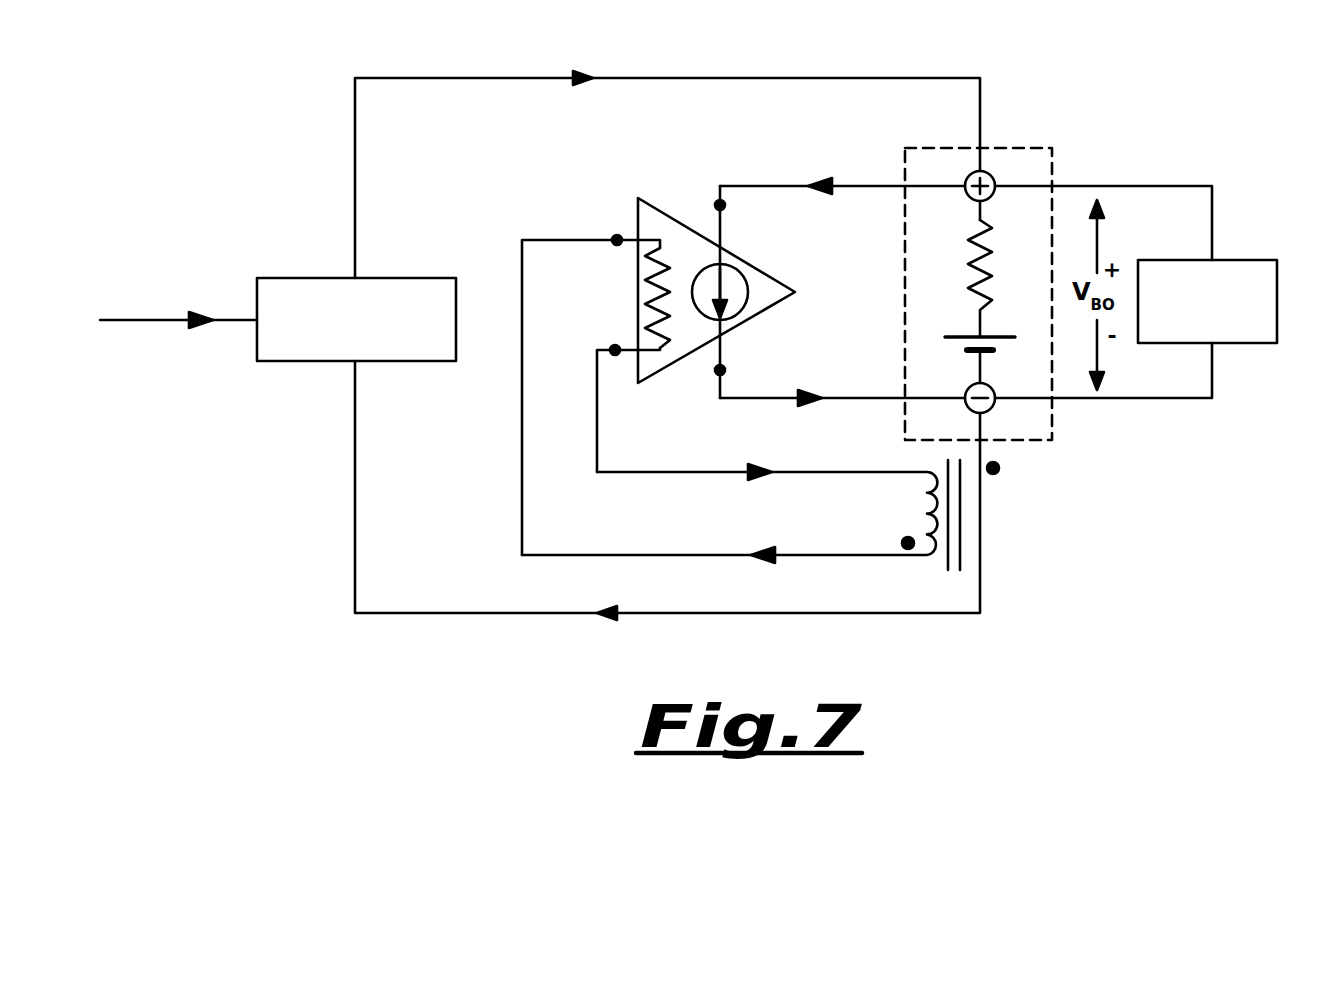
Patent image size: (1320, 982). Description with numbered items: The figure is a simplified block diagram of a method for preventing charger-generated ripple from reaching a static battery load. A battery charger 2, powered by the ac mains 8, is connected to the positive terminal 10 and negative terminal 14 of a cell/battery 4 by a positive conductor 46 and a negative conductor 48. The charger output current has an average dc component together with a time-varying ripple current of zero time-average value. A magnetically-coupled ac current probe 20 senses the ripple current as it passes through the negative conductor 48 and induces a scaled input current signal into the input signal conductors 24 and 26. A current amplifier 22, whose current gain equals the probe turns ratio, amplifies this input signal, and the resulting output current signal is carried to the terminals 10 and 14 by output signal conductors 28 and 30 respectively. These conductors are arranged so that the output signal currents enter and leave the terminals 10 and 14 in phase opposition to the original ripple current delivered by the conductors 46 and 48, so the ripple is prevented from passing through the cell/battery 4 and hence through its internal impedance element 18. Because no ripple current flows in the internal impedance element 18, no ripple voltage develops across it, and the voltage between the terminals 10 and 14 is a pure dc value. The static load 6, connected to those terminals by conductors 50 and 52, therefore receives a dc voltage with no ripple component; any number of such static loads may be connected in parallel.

The battery charger 2 is at (309, 278).
The ac mains 8 is at (219, 320).
The cell/battery 4 is at (905, 160).
The positive terminal 10 is at (963, 192).
The negative terminal 14 is at (963, 393).
The internal impedance element 18 is at (993, 253).
The magnetically-coupled ac current probe 20 is at (933, 470).
The current amplifier 22 is at (663, 205).
The input signal conductor 24 is at (527, 258).
The input signal conductor 26 is at (597, 445).
The output signal conductor 28 is at (757, 185).
The output signal conductor 30 is at (748, 400).
The positive conductor 46 is at (982, 118).
The negative conductor 48 is at (985, 430).
The conductor 50 is at (1082, 185).
The conductor 52 is at (1073, 400).
The static load 6 is at (1222, 260).